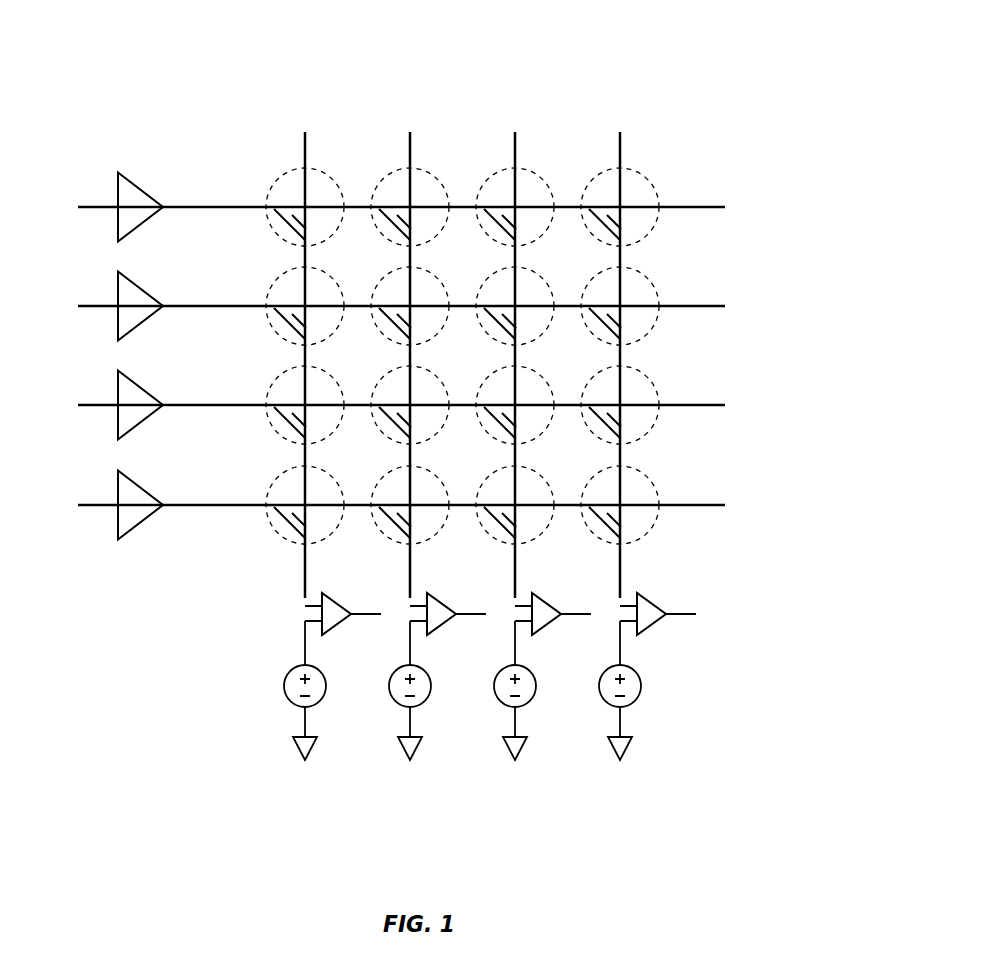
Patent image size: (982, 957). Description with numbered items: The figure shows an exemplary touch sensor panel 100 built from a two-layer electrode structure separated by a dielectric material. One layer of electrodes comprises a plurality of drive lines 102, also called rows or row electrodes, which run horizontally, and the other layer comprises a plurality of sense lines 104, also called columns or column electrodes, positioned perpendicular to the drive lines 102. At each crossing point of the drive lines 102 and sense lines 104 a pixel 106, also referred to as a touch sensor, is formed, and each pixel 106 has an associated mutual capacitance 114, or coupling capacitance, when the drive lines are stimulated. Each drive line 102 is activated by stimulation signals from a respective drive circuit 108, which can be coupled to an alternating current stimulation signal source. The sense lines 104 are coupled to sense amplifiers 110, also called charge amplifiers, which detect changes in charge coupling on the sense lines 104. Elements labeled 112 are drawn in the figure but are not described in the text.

The touch sensor panel 100 is at (456, 339).
The drive lines 102 is at (197, 207).
The sense lines 104 is at (622, 147).
The pixels 106 is at (298, 167).
The drive circuits 108 is at (118, 523).
The sense amplifiers 110 is at (655, 623).
The reverse voltage sources 112 is at (403, 705).
The mutual capacitance 114 is at (393, 438).